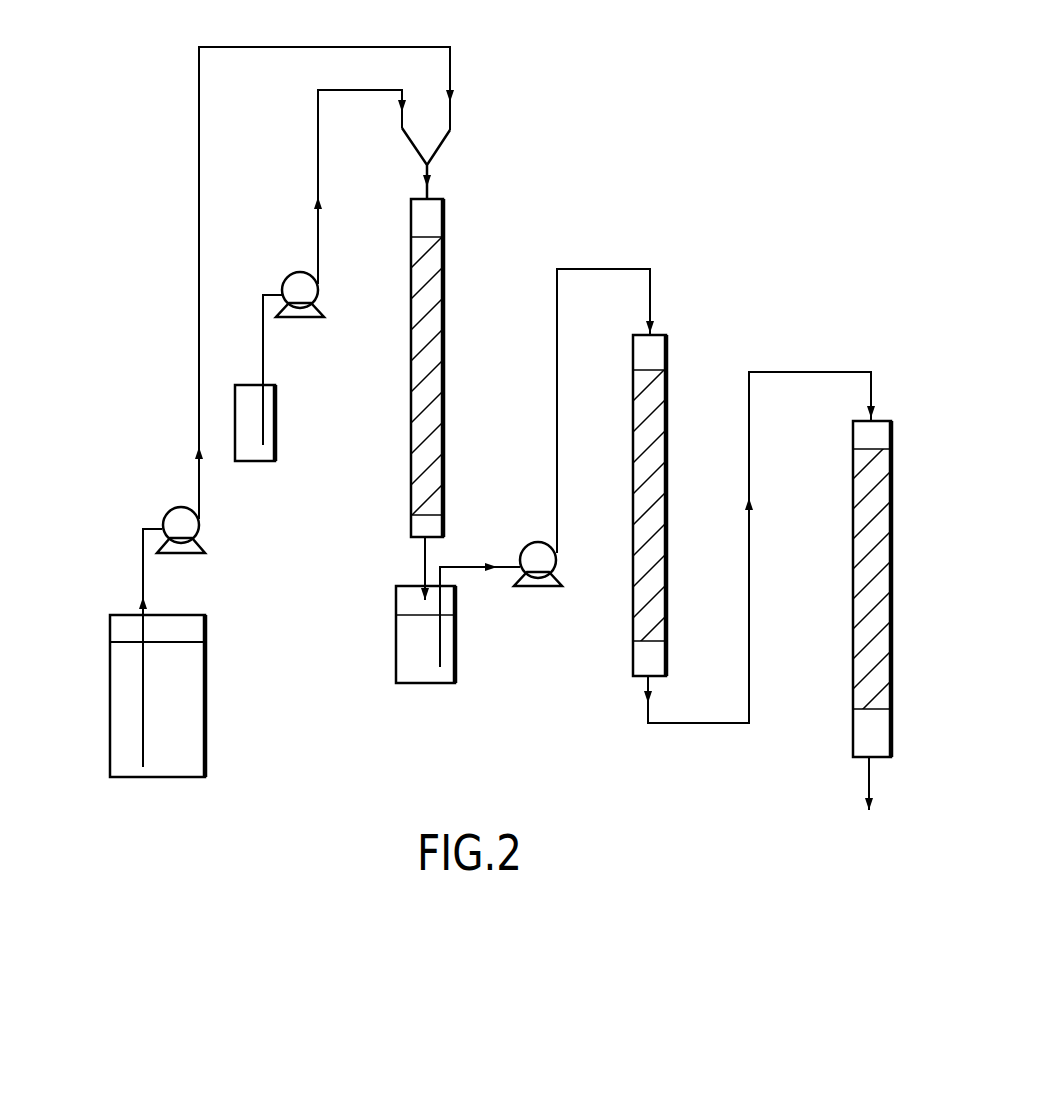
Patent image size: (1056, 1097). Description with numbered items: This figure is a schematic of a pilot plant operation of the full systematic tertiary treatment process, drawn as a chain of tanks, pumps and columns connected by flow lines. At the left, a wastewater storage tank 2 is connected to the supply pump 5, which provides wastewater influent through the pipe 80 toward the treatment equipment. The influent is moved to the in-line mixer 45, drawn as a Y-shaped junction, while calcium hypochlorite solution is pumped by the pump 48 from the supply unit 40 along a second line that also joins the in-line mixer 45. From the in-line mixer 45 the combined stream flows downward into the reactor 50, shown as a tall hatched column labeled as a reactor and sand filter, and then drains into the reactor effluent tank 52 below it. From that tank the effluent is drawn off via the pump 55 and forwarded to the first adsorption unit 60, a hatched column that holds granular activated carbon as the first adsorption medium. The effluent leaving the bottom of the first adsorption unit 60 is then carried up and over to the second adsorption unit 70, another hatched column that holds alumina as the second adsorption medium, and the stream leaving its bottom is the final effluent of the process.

The wastewater storage tank 2 is at (205, 717).
The supply pump 5 is at (198, 531).
The pipe 80 is at (199, 290).
The supply unit 40 is at (275, 445).
The pump 48 is at (310, 292).
The in-line mixer 45 is at (447, 143).
The reactor 50 is at (445, 302).
The reactor effluent tank 52 is at (457, 665).
The pump 55 is at (538, 546).
The first adsorption unit 60 is at (668, 412).
The second adsorption unit 70 is at (893, 487).